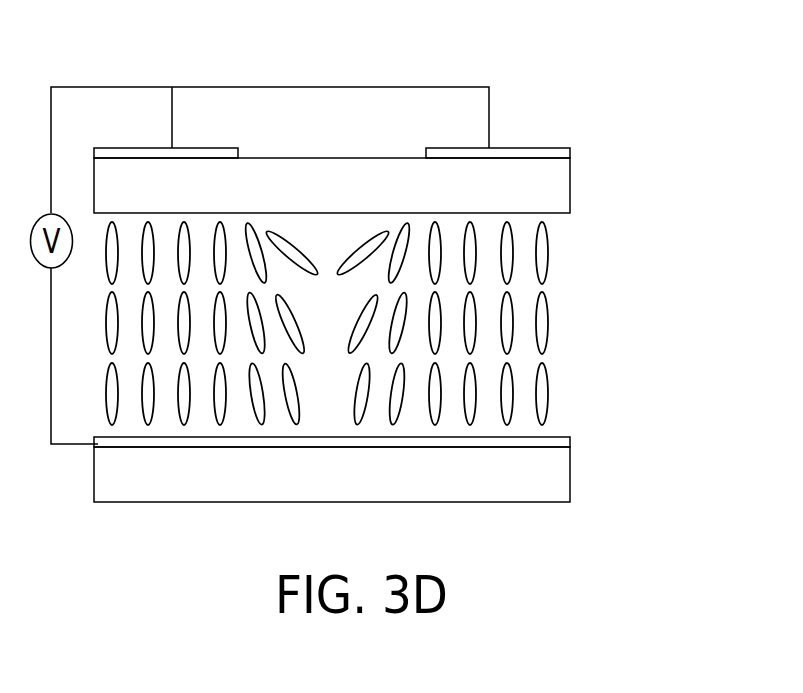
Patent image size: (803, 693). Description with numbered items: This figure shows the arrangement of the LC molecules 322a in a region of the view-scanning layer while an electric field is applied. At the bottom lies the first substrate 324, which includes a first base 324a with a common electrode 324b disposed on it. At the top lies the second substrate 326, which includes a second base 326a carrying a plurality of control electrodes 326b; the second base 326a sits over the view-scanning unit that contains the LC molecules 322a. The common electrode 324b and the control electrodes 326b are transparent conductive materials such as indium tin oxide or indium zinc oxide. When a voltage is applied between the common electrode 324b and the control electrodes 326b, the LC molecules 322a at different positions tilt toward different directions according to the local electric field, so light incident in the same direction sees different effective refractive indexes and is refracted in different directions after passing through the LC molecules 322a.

The LC molecules 322a is at (548, 255).
The first substrate 324 is at (415, 467).
The first base 324a is at (558, 491).
The common electrode 324b is at (558, 444).
The second substrate 326 is at (418, 153).
The second base 326a is at (550, 188).
The control electrodes 326b is at (555, 156).